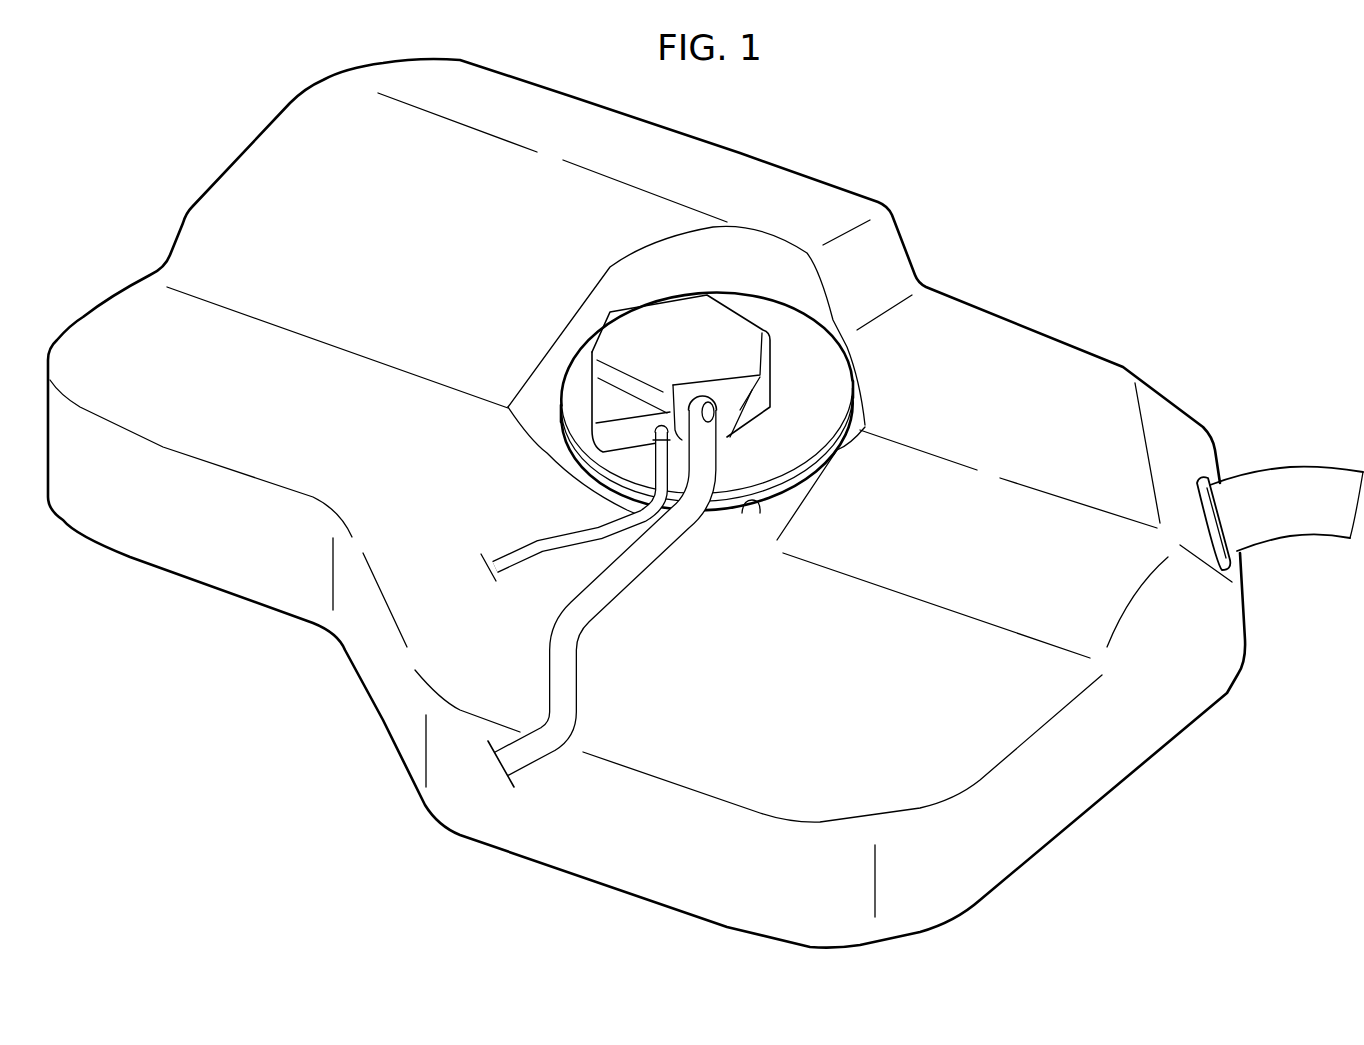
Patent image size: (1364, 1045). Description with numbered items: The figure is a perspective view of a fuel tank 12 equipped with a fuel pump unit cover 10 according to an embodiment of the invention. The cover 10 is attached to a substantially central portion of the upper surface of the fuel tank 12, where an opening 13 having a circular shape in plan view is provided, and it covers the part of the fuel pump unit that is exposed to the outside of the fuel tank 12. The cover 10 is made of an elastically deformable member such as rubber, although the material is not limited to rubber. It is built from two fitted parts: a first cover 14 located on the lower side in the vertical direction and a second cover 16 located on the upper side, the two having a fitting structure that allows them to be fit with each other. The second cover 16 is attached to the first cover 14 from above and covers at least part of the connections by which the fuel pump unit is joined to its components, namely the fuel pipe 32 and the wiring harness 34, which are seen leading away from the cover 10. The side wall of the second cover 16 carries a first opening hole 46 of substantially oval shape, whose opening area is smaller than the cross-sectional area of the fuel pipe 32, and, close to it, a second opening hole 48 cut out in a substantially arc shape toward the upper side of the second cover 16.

The fuel pump unit cover 10 is at (757, 273).
The fuel tank 12 is at (1003, 290).
The opening 13 is at (760, 513).
The first cover 14 is at (793, 388).
The second cover 16 is at (650, 327).
The fuel pipe 32 is at (629, 594).
The wiring harness 34 is at (537, 536).
The first opening hole 46 is at (714, 421).
The second opening hole 48 is at (656, 432).